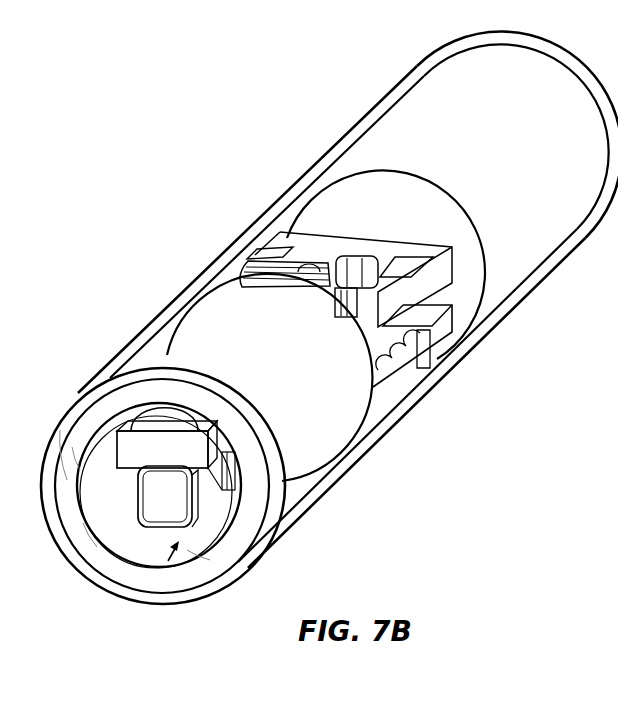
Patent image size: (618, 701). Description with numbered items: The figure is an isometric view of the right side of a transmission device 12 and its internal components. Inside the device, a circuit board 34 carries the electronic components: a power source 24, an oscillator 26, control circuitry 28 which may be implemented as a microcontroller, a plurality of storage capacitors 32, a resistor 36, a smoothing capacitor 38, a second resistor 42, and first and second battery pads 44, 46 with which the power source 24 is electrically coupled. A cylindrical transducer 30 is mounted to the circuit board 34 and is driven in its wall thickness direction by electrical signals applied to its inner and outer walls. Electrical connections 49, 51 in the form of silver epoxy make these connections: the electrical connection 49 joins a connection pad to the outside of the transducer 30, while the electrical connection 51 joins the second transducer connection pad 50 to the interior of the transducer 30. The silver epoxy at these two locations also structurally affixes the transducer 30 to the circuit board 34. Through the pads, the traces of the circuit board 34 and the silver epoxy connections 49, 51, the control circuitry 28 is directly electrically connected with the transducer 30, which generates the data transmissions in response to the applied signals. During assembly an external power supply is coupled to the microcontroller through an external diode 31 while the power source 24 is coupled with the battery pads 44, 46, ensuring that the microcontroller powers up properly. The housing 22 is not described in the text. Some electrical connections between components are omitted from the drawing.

The transmission device 12 is at (268, 126).
The housing tube 22 is at (282, 506).
The power source 24 is at (410, 126).
The oscillator 26 is at (447, 344).
The control circuitry 28 is at (410, 362).
The transducer 30 is at (217, 322).
The external diode 31 is at (147, 550).
The storage capacitors 32 is at (165, 513).
The circuit board 34 is at (448, 270).
The resistor 36 is at (350, 252).
The smoothing capacitor 38 is at (370, 275).
The resistor 42 is at (262, 272).
The first battery pad 44 is at (276, 249).
The second battery pad 46 is at (408, 265).
The electrical connection 49 is at (8, 151).
The second transducer connection pad 50 is at (240, 443).
The electrical connection 51 is at (163, 412).